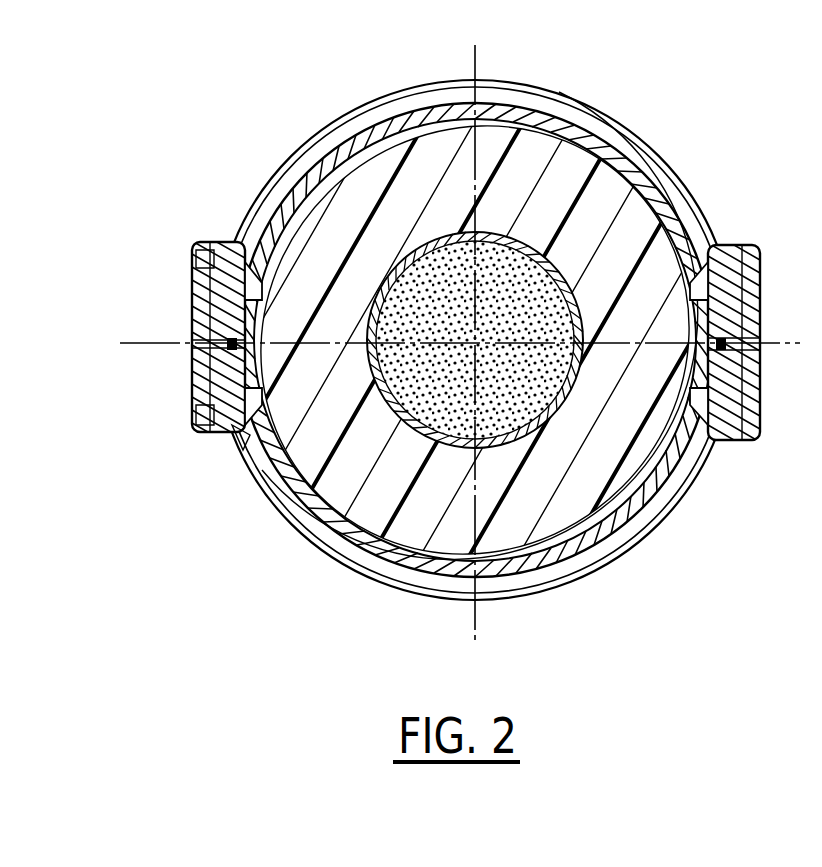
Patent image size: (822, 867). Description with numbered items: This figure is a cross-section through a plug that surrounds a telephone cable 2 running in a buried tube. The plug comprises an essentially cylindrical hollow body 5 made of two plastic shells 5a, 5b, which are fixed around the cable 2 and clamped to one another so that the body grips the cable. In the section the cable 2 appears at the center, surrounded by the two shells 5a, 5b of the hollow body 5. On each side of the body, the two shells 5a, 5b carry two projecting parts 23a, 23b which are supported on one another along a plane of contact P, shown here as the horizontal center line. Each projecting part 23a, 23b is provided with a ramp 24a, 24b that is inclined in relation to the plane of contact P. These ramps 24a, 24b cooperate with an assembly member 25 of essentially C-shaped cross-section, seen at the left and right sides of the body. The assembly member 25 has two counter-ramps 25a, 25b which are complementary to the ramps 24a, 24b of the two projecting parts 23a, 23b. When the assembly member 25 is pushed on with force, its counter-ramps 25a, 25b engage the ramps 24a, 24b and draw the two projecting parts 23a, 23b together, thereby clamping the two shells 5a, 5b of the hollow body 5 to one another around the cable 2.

The cable 2 is at (565, 290).
The hollow body 5 is at (605, 137).
The shell 5a is at (665, 175).
The shell 5b is at (563, 550).
The projecting part 23a is at (192, 301).
The projecting part 23b is at (203, 390).
The ramp 24a is at (248, 272).
The ramp 24b is at (235, 415).
The assembly member 25 is at (190, 417).
The counter-ramp 25a is at (192, 268).
The counter-ramp 25b is at (240, 445).
The plane of contact P is at (155, 345).